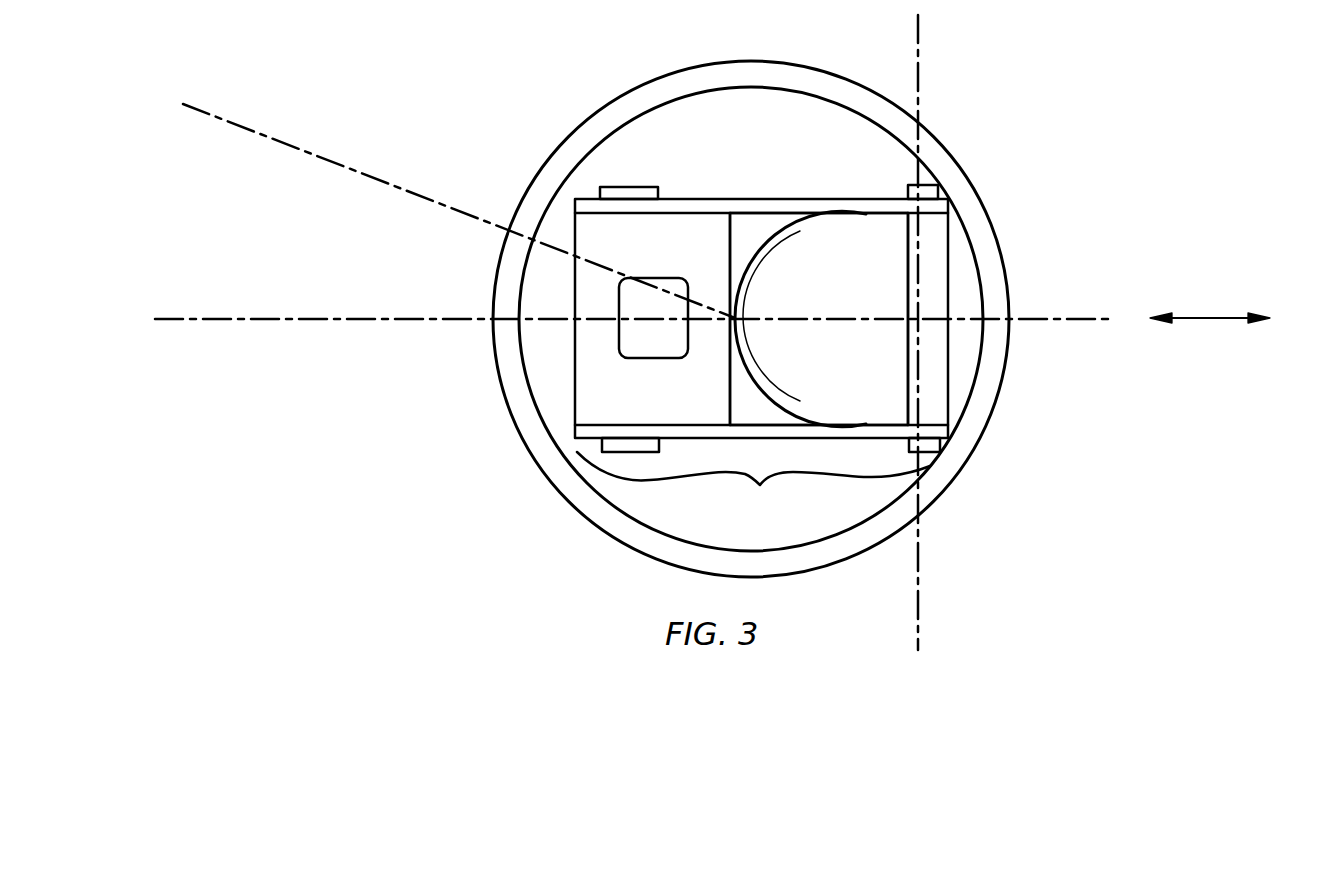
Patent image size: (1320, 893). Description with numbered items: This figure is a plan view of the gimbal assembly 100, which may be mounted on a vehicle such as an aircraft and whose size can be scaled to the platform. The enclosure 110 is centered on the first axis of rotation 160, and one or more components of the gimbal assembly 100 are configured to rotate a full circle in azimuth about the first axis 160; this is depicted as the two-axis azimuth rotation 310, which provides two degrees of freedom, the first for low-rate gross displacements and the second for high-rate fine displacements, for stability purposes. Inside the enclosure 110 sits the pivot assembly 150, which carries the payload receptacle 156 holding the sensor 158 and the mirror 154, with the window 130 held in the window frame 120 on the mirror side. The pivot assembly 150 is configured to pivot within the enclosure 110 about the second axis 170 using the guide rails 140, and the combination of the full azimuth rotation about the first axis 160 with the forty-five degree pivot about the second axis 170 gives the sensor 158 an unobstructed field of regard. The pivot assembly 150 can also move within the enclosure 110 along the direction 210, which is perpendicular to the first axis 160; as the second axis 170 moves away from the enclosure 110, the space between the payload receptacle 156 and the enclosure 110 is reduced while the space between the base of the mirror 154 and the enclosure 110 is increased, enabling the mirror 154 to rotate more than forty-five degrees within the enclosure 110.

The gimbal assembly 100 is at (531, 40).
The enclosure 110 is at (527, 447).
The window frame 120 is at (684, 515).
The window 130 is at (744, 234).
The guide rails 140 is at (623, 450).
The pivot assembly 150 is at (760, 485).
The mirror 154 is at (840, 373).
The payload receptacle 156 is at (678, 243).
The sensor 158 is at (620, 340).
The first axis of rotation 160 is at (747, 303).
The second axis 170 is at (918, 61).
The direction 210 is at (1206, 320).
The 2-axis azimuth rotation 310 is at (358, 180).